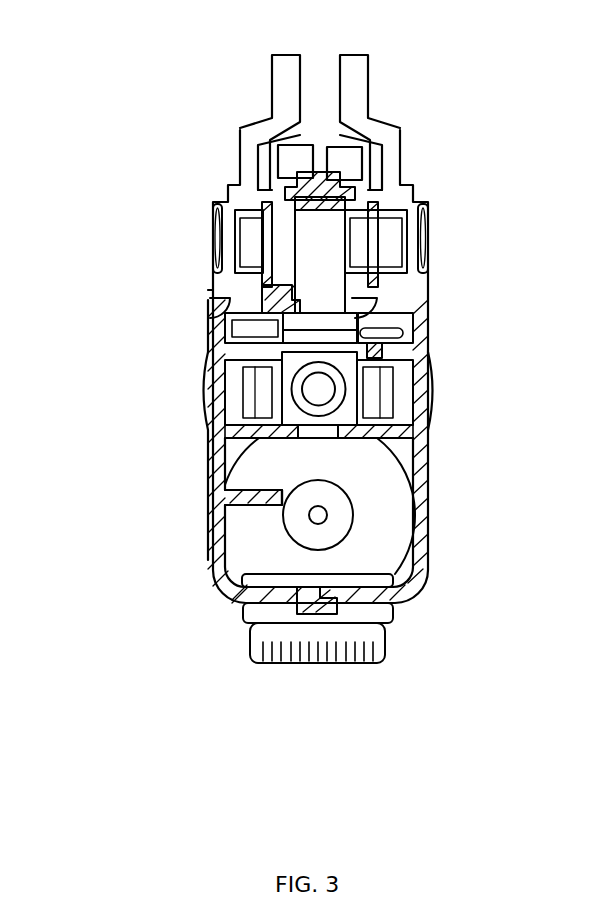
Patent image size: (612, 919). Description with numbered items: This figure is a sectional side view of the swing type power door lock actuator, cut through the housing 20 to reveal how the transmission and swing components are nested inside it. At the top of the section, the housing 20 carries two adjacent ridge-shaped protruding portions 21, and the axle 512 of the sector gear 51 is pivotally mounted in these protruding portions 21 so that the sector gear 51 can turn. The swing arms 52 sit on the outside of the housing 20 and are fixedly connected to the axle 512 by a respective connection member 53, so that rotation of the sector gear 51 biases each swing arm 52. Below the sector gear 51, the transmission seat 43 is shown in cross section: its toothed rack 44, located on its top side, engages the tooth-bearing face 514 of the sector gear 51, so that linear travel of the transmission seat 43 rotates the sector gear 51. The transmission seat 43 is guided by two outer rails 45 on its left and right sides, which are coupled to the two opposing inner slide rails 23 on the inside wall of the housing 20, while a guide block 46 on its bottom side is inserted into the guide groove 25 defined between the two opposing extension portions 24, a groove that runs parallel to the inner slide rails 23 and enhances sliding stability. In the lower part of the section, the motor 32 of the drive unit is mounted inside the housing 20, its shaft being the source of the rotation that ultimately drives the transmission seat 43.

The housing 20 is at (222, 588).
The ridge-shaped protruding portions 21 is at (292, 153).
The inner slide rails 23 is at (268, 305).
The extension portions 24 is at (285, 435).
The guide groove 25 is at (254, 496).
The motor 32 is at (387, 530).
The transmission seat 43 is at (347, 410).
The toothed rack 44 is at (340, 333).
The outer rails 45 is at (250, 360).
The guide block 46 is at (196, 520).
The sector gear 51 is at (393, 300).
The swing arms 52 is at (248, 150).
The connection member 53 is at (216, 240).
The axle 512 is at (270, 248).
The tooth-bearing face 514 is at (322, 297).